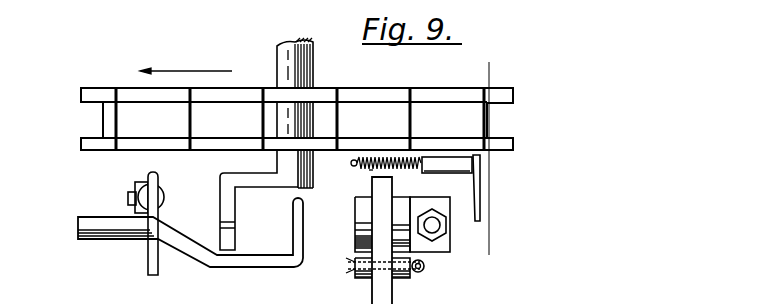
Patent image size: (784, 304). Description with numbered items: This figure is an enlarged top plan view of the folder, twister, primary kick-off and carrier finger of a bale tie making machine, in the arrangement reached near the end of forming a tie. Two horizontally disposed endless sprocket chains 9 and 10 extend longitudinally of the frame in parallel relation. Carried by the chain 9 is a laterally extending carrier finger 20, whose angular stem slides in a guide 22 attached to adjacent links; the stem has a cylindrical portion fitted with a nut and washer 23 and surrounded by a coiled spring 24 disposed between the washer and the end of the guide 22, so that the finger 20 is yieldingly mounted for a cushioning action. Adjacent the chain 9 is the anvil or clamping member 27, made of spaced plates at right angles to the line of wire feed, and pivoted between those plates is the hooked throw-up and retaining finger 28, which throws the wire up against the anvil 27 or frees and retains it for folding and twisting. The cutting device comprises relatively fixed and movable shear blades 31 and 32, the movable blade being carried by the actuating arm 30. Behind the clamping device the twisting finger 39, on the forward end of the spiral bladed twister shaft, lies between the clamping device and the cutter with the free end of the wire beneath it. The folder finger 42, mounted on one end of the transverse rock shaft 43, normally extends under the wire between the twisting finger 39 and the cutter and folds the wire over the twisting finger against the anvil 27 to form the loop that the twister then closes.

The endless sprocket chain 9 is at (297, 119).
The endless sprocket chain 10 is at (498, 165).
The carrier finger 20 is at (476, 187).
The guide 22 is at (443, 163).
The nut and washer 23 is at (370, 166).
The coiled spring 24 is at (370, 172).
The anvil or clamping member 27 is at (365, 235).
The throw-up and retaining finger 28 is at (357, 212).
The actuating arm 30 is at (158, 268).
The shear blade 31 is at (153, 183).
The shear blade 32 is at (135, 200).
The twisting finger 39 is at (294, 229).
The folder finger 42 is at (220, 207).
The rock shaft 43 is at (313, 67).